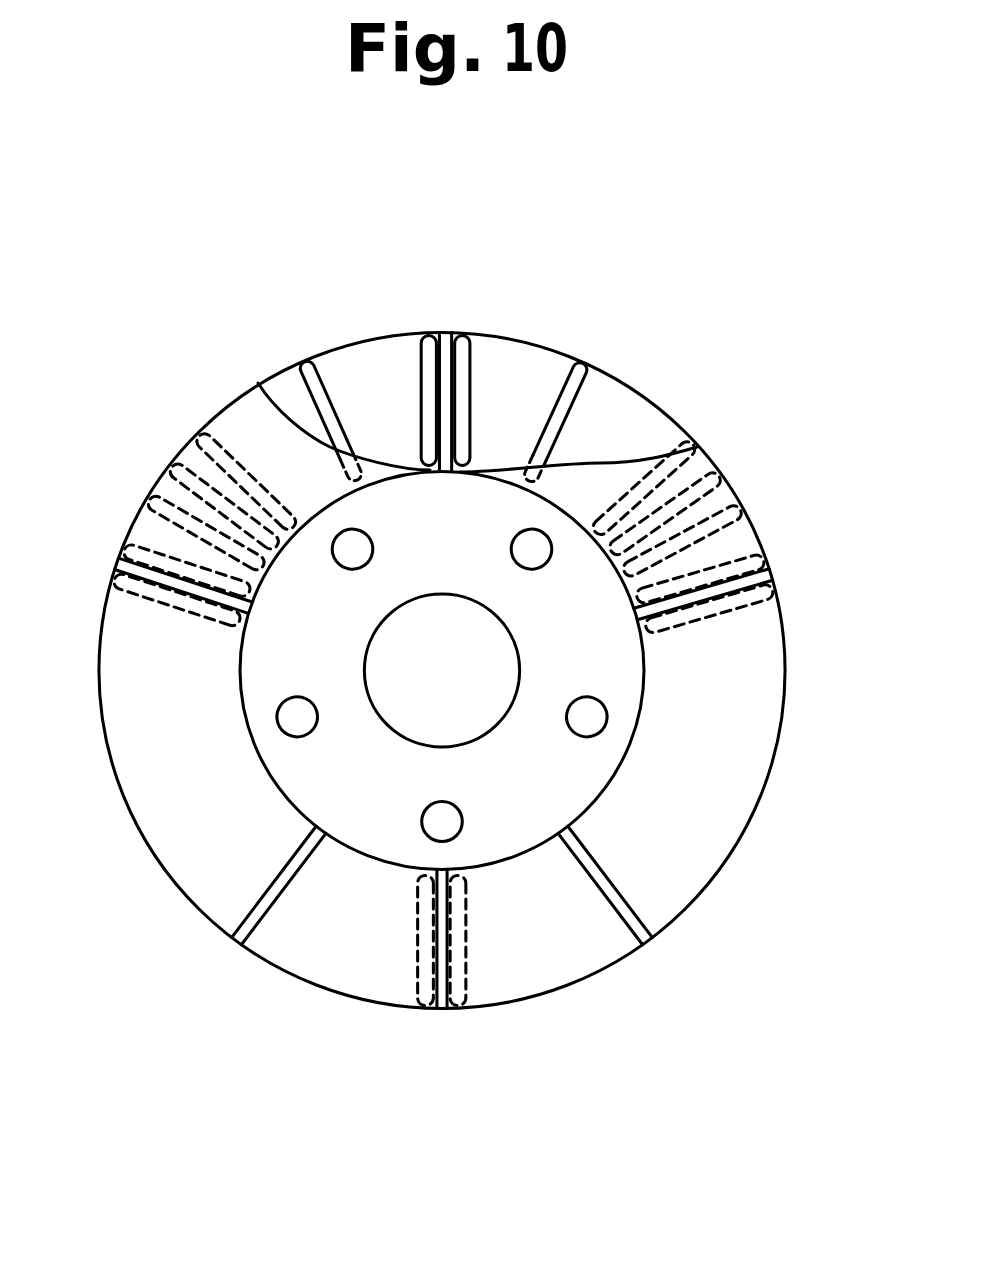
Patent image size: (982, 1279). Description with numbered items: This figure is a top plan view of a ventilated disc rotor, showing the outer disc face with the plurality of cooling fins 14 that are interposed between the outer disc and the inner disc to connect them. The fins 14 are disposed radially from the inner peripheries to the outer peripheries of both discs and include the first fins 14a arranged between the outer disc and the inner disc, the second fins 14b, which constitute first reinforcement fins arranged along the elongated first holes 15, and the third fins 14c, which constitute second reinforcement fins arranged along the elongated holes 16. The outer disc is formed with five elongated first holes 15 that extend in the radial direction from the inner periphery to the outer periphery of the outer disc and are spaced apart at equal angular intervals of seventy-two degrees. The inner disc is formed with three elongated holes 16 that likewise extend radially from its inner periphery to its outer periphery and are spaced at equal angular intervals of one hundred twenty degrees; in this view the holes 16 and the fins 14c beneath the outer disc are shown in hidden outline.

The cooling fins 14 is at (486, 204).
The first fins 14a is at (211, 447).
The second fins 14b is at (433, 335).
The third fins 14c is at (160, 497).
The elongated first holes 15 is at (118, 562).
The elongated holes 16 is at (439, 1012).